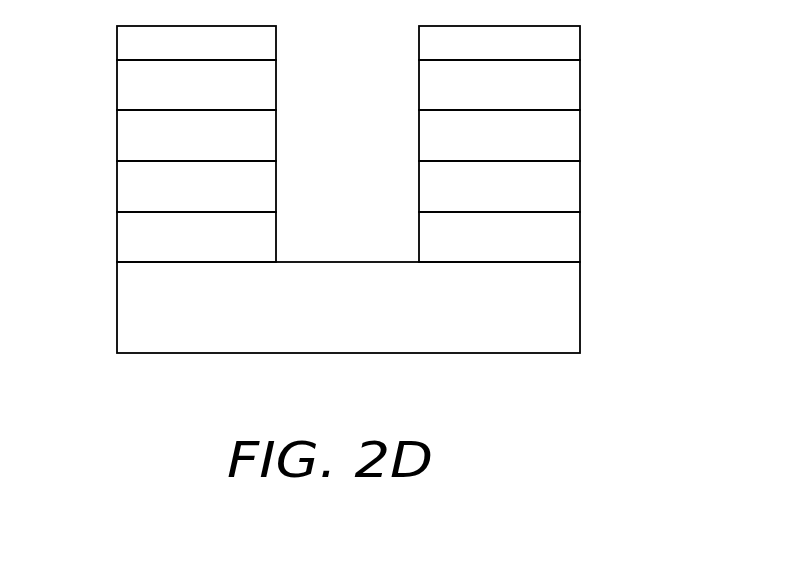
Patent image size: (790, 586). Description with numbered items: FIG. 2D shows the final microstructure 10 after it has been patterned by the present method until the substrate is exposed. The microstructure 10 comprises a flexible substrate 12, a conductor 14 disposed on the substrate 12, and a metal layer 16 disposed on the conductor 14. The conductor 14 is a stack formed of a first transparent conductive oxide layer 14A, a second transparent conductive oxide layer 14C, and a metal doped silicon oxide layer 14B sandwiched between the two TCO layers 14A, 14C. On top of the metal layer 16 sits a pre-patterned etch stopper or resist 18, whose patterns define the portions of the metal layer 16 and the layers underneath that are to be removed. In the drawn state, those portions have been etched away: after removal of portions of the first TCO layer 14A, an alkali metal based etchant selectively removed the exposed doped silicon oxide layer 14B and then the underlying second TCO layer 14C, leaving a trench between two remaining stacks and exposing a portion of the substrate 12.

The microstructure 10 is at (360, 212).
The flexible substrate 12 is at (580, 302).
The conductor 14 is at (360, 186).
The first transparent conductive oxide layer 14A is at (580, 135).
The metal doped silicon oxide layer 14B is at (580, 189).
The second transparent conductive oxide layer 14C is at (580, 237).
The metal layer 16 is at (580, 84).
The etch stopper or resist 18 is at (580, 43).